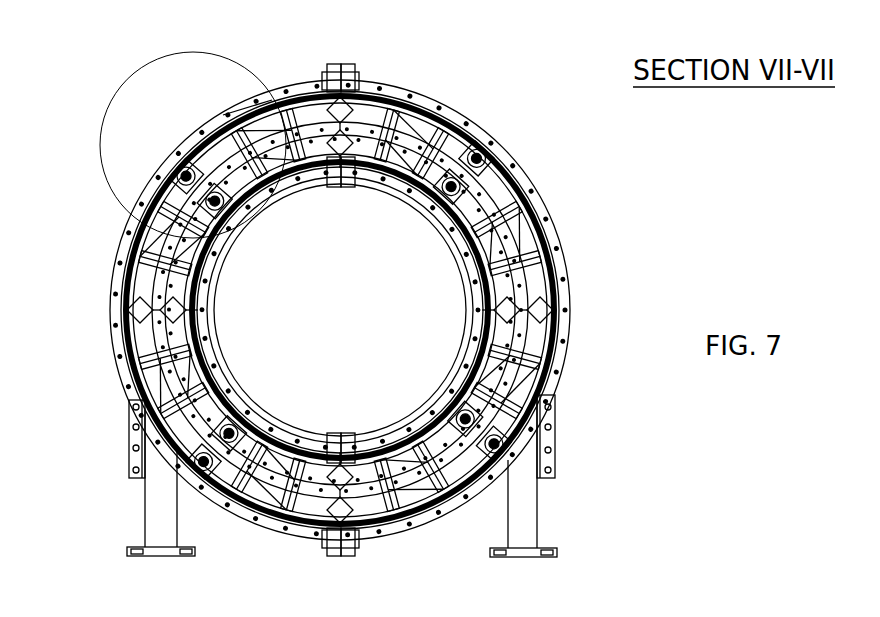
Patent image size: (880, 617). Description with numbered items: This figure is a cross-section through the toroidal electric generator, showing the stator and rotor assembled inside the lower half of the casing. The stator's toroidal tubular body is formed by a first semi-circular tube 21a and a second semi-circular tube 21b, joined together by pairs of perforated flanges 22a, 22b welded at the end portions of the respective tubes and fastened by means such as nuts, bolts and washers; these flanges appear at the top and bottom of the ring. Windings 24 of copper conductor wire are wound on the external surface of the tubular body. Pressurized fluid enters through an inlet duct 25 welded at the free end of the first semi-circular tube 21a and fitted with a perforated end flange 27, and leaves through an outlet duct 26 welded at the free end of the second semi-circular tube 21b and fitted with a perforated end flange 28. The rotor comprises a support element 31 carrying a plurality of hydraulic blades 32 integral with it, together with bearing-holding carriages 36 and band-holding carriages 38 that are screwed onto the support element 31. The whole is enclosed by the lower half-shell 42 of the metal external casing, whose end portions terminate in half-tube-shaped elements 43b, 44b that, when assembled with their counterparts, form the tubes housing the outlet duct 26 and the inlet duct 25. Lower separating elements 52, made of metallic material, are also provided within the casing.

The first semi-circular tube 21a is at (462, 130).
The second semi-circular tube 21b is at (128, 257).
The perforated flange 22a is at (348, 63).
The perforated flange 22b is at (335, 63).
The windings 24 is at (380, 90).
The inlet duct 25 is at (538, 515).
The outlet duct 26 is at (147, 498).
The perforated end flange 27 is at (543, 557).
The perforated end flange 28 is at (138, 555).
The support element 31 is at (528, 248).
The hydraulic blades 32 is at (432, 517).
The bearing-holding carriages 36 is at (182, 175).
The band-holding carriages 38 is at (143, 320).
The lower half-shell 42 is at (180, 138).
The half-tube-shaped element 43b is at (130, 438).
The half-tube-shaped element 44b is at (553, 437).
The lower separating elements 52 is at (272, 100).